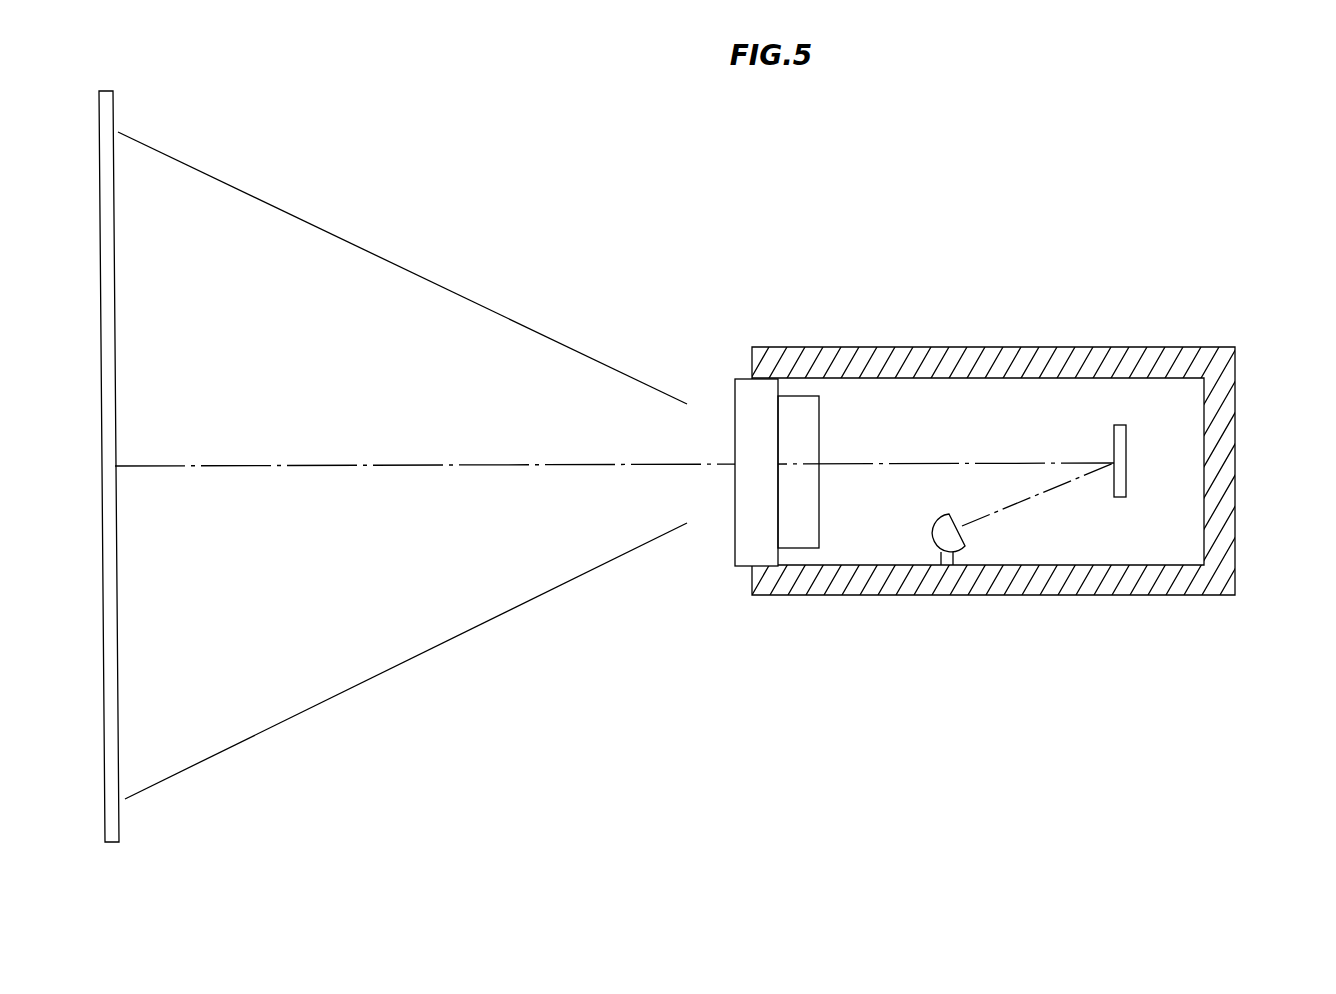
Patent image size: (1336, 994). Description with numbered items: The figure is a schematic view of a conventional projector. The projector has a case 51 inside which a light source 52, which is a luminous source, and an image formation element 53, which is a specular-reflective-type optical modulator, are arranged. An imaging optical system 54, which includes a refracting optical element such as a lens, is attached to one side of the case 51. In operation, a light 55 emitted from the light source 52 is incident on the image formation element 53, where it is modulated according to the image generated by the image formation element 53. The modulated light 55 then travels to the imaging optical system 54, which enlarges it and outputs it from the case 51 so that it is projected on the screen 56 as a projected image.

The case 51 is at (972, 407).
The light source 52 is at (935, 540).
The image formation element 53 is at (1120, 497).
The imaging optical system 54 is at (745, 395).
The light 55 is at (614, 380).
The screen 56 is at (198, 461).